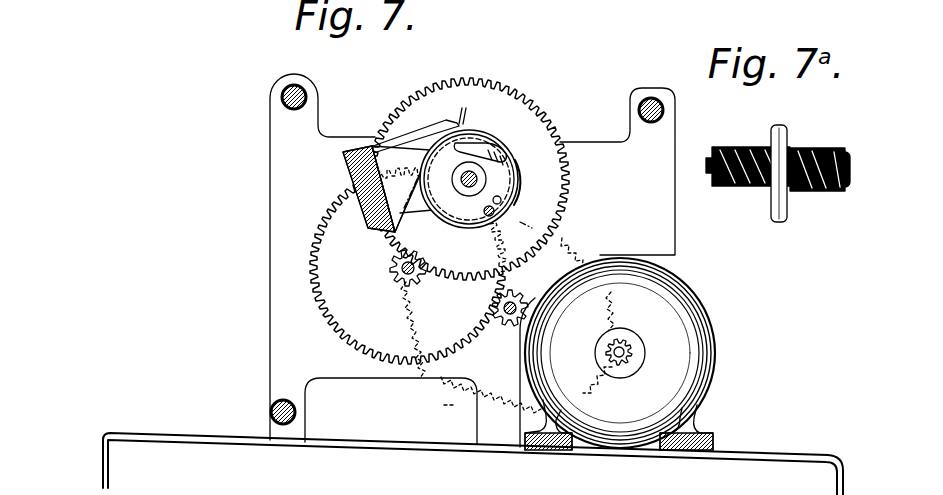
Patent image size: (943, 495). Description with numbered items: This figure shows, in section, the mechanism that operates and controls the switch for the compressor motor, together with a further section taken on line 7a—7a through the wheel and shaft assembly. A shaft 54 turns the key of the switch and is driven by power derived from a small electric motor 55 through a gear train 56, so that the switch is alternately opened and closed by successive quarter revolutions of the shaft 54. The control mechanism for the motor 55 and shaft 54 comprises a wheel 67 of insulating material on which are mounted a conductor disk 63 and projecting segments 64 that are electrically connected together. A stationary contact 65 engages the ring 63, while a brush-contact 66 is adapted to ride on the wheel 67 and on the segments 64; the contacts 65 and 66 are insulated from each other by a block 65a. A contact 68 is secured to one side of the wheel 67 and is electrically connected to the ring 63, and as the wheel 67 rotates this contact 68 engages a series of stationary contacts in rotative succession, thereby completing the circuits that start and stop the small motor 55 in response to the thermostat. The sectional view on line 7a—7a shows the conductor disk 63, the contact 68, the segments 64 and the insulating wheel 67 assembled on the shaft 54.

In FIG. 7, the shaft 54 is at (467, 190).
In FIG. 7A, the shaft 54 is at (775, 128).
In FIG. 7, the small electric motor 55 is at (718, 341).
In FIG. 7, the gear train 56 is at (442, 410).
In FIG. 7, the conductor disk 63 is at (421, 281).
In FIG. 7A, the conductor disk 63 is at (740, 147).
In FIG. 7, the projecting segments 64 is at (470, 132).
In FIG. 7A, the projecting segments 64 is at (851, 178).
In FIG. 7, the stationary contact 65 is at (400, 226).
In FIG. 7, the block 65a is at (343, 163).
In FIG. 7, the brush-contact 66 is at (406, 137).
In FIG. 7A, the wheel 67 is at (712, 165).
In FIG. 7, the contact 68 is at (487, 163).
In FIG. 7A, the contact 68 is at (800, 192).
In FIG. 7, the section line 7a is at (471, 191).